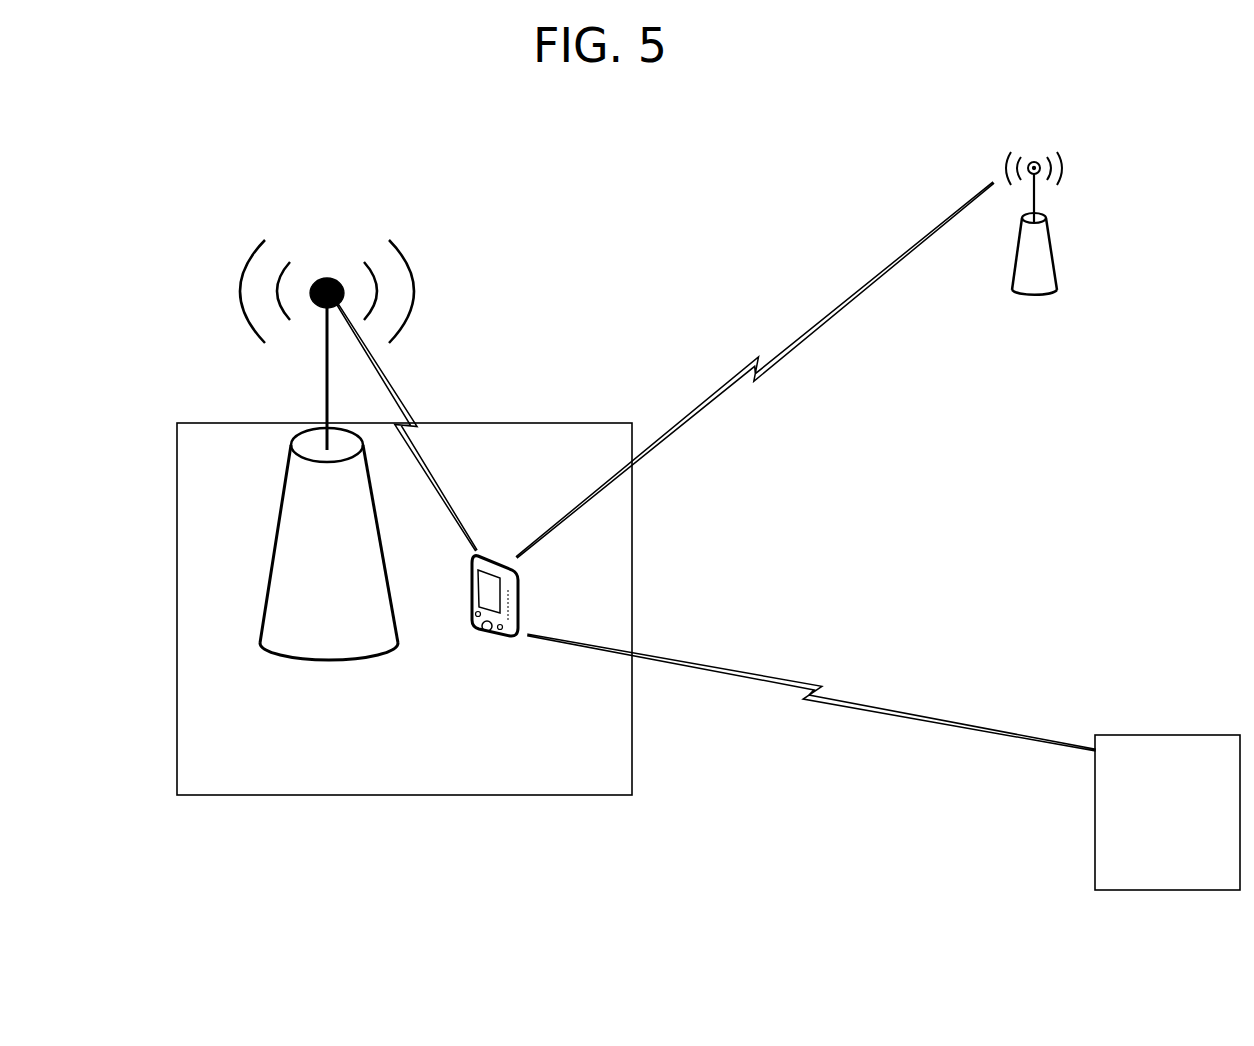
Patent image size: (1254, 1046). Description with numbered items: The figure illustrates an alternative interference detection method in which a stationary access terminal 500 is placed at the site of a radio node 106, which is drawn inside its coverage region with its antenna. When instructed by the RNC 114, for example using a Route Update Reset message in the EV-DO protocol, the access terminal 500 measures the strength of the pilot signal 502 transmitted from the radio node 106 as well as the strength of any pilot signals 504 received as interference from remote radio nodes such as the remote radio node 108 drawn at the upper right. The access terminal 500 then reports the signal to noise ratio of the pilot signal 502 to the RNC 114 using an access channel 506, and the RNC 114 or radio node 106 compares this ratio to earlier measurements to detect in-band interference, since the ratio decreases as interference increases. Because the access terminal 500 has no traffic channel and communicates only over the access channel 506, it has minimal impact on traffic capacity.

The radio node 106 is at (404, 517).
The remote radio node 108 is at (1072, 275).
The RNC 114 is at (1167, 812).
The access terminal 500 is at (498, 628).
The pilot signal 502 is at (406, 428).
The pilot signals from remote radio nodes 504 is at (755, 369).
The access channel 506 is at (811, 695).